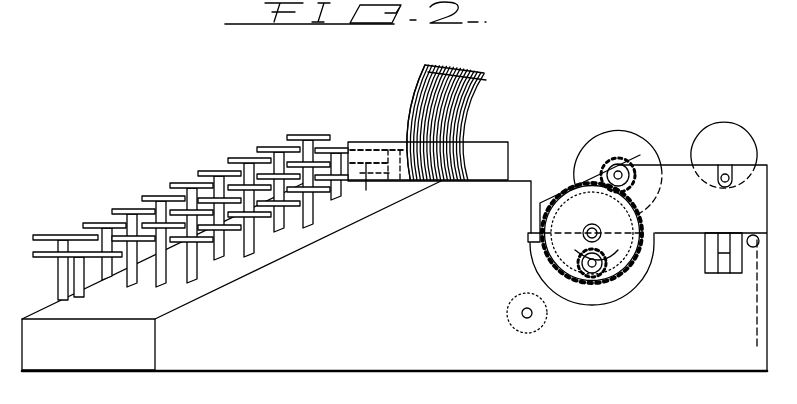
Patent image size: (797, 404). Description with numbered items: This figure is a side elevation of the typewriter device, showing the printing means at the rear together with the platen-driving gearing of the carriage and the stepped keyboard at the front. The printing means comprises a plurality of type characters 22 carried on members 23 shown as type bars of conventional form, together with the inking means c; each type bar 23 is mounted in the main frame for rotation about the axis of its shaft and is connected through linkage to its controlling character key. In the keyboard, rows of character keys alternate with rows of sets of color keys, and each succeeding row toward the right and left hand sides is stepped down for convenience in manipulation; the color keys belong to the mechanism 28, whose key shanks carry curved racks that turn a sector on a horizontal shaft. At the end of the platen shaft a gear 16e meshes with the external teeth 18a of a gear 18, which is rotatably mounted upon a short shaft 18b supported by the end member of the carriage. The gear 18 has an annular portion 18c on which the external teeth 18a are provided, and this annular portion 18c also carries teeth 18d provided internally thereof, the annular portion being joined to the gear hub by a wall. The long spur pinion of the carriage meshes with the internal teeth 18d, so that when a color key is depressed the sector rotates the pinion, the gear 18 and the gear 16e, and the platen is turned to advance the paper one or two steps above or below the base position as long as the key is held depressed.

The inking means c is at (428, 157).
The type characters 22 is at (452, 67).
The type bars 23 is at (412, 103).
The color key mechanism 28 is at (363, 148).
The gear 16e is at (640, 155).
The gear 18 is at (592, 233).
The external teeth 18a is at (603, 219).
The short shaft 18b is at (585, 237).
The annular portion 18c is at (585, 283).
The internal teeth 18d is at (609, 273).